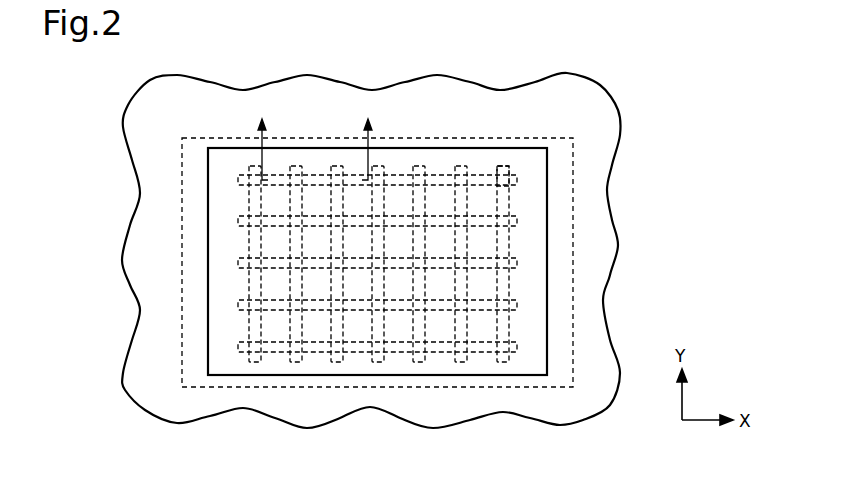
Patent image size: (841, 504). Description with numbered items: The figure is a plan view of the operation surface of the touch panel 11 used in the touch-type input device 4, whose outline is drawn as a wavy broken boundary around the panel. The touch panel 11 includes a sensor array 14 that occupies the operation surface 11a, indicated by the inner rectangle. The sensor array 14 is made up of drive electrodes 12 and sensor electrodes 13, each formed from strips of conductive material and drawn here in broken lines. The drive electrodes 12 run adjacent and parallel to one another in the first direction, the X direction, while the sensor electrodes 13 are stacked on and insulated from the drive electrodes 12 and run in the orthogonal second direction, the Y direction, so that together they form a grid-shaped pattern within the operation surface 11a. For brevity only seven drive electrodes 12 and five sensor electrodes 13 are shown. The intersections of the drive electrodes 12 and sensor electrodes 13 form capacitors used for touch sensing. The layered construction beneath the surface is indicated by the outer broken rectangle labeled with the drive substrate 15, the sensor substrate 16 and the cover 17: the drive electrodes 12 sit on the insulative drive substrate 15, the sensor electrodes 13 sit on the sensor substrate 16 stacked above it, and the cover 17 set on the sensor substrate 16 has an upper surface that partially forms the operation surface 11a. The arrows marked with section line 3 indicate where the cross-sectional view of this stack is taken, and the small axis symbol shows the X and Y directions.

The section line III-III 3 is at (315, 136).
The touch-type input device 4 is at (129, 150).
The touch panel 11 is at (585, 135).
The operation surface 11a is at (538, 202).
The drive electrodes 12 is at (503, 362).
The sensor electrodes 13 is at (517, 265).
The sensor array 14 is at (508, 167).
The drive substrate 15 is at (465, 225).
The sensor substrate 16 is at (465, 225).
The cover 17 is at (465, 225).